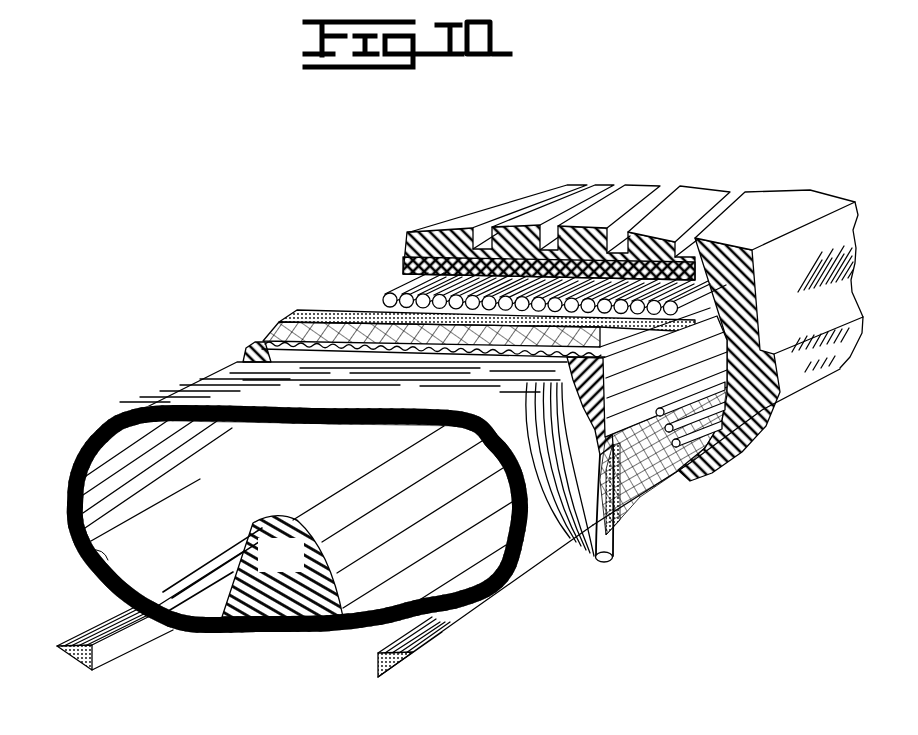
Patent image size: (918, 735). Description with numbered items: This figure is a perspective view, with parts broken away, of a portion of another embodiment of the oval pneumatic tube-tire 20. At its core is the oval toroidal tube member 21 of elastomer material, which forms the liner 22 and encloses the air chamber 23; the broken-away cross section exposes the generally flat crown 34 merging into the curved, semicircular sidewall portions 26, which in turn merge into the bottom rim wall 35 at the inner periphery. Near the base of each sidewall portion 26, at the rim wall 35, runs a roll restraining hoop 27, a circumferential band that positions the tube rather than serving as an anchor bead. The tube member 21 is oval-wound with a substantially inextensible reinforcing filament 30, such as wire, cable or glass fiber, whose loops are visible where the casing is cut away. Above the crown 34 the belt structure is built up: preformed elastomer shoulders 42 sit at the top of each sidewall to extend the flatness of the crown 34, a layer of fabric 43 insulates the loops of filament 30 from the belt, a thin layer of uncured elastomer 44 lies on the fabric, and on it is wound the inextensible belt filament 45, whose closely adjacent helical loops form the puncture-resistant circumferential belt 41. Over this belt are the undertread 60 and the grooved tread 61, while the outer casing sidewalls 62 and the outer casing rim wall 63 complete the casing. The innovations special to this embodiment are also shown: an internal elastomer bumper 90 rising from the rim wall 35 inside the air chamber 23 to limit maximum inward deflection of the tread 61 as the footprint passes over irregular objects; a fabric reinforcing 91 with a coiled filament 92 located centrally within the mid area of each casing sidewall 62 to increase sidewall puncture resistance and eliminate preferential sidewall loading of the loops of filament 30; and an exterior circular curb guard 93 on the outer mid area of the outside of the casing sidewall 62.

The oval pneumatic tube-tire 20 is at (236, 356).
The oval toroidal tube member 21 is at (76, 441).
The liner 22 is at (95, 556).
The air chamber 23 is at (255, 495).
The sidewall portion 26 is at (68, 492).
The roll restraining hoop 27 is at (97, 617).
The inextensible reinforcing filament 30 is at (613, 557).
The crown 34 is at (377, 400).
The rim wall 35 is at (193, 632).
The circumferential belt 41 is at (504, 314).
The elastomer shoulder 42 is at (708, 371).
The layer of fabric 43 is at (317, 323).
The layer of uncured elastomer 44 is at (383, 302).
The belt filament 45 is at (407, 268).
The undertread 60 is at (754, 267).
The tread 61 is at (477, 218).
The outer casing sidewall 62 is at (765, 411).
The outer casing rim wall 63 is at (683, 473).
The internal elastomer bumper 90 is at (300, 571).
The fabric reinforcing 91 is at (633, 493).
The coiled filament 92 is at (704, 397).
The exterior circular curb guard 93 is at (827, 335).